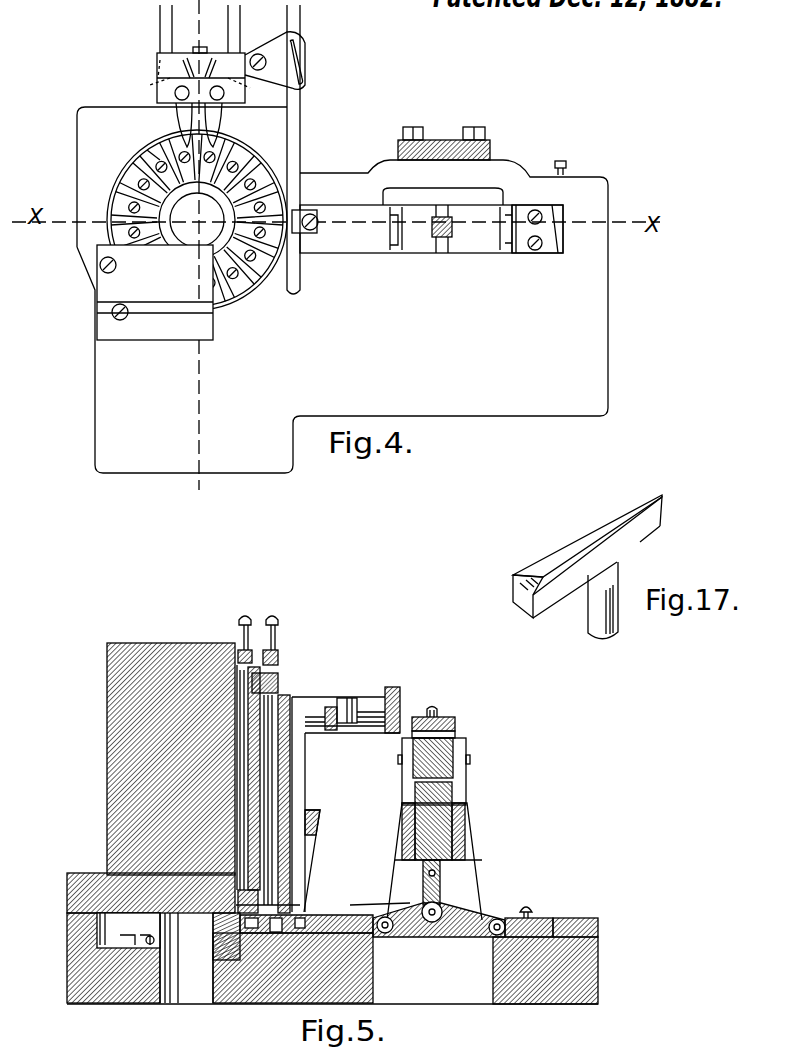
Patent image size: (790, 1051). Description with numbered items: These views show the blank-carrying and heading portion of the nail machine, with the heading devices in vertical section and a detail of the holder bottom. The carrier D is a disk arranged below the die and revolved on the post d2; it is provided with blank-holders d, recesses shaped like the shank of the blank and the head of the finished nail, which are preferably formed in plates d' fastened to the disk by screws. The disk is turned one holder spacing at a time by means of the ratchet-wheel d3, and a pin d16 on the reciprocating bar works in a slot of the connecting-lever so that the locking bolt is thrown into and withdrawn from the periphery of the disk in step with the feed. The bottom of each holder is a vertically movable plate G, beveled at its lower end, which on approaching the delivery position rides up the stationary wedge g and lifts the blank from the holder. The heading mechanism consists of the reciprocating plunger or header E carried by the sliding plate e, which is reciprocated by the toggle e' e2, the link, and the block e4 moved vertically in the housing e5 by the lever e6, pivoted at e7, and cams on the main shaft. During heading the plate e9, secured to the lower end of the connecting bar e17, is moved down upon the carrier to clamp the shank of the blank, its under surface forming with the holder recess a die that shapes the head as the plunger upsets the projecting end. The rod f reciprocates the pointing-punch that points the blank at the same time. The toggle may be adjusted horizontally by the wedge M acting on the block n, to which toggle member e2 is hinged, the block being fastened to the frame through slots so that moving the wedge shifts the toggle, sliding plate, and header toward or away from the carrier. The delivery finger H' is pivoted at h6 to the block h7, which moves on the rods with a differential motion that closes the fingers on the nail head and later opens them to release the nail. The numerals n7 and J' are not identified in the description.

In FIG. 4, the carrier D is at (197, 216).
In FIG. 4, the blank-holders d is at (186, 214).
In FIG. 4, the plates d' is at (145, 141).
In FIG. 4, the finger H' is at (207, 76).
In FIG. 4, the pivot h6 is at (157, 78).
In FIG. 4, the block h7 is at (280, 35).
In FIG. 4, the pin d16 is at (305, 42).
In FIG. 4, the screw n7 is at (562, 156).
In FIG. 17, the plate G is at (587, 556).
In FIG. 17, the post d2 is at (589, 600).
In FIG. 5, the rod f is at (235, 752).
In FIG. 5, the ratchet-wheel d3 is at (128, 930).
In FIG. 5, the wedge g is at (226, 936).
In FIG. 5, the plate J' is at (248, 901).
In FIG. 5, the connecting bar e17 is at (293, 690).
In FIG. 5, the plate e9 is at (292, 903).
In FIG. 5, the plunger or header E is at (305, 912).
In FIG. 5, the housing e5 is at (470, 850).
In FIG. 5, the block e4 is at (468, 808).
In FIG. 5, the pivot e7 is at (447, 771).
In FIG. 5, the lever e6 is at (458, 727).
In FIG. 5, the sliding plate e is at (372, 915).
In FIG. 5, the toggle member e' is at (395, 934).
In FIG. 5, the toggle member e2 is at (500, 934).
In FIG. 5, the wedge M is at (556, 910).
In FIG. 5, the block n is at (515, 908).